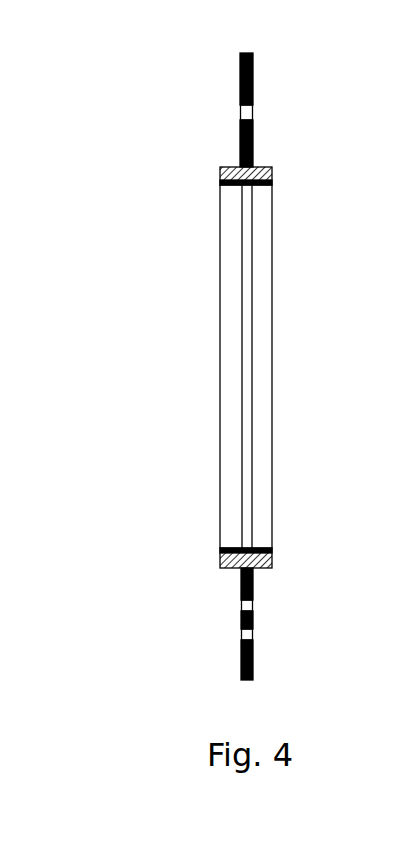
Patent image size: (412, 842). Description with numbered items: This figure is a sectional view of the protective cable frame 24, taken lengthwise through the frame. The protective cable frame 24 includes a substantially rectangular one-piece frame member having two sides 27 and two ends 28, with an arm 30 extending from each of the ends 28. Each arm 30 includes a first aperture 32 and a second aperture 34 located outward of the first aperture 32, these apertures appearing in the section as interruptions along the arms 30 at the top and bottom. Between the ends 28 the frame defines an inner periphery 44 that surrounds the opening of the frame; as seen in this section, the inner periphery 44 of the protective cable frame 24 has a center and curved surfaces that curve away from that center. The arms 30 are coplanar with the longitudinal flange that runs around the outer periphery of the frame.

The protective cable frame 24 is at (134, 125).
The sides 27 is at (243, 637).
The ends 28 is at (232, 166).
The arm 30 is at (253, 147).
The first aperture 32 is at (253, 112).
The second aperture 34 is at (253, 78).
The inner periphery 44 is at (241, 320).